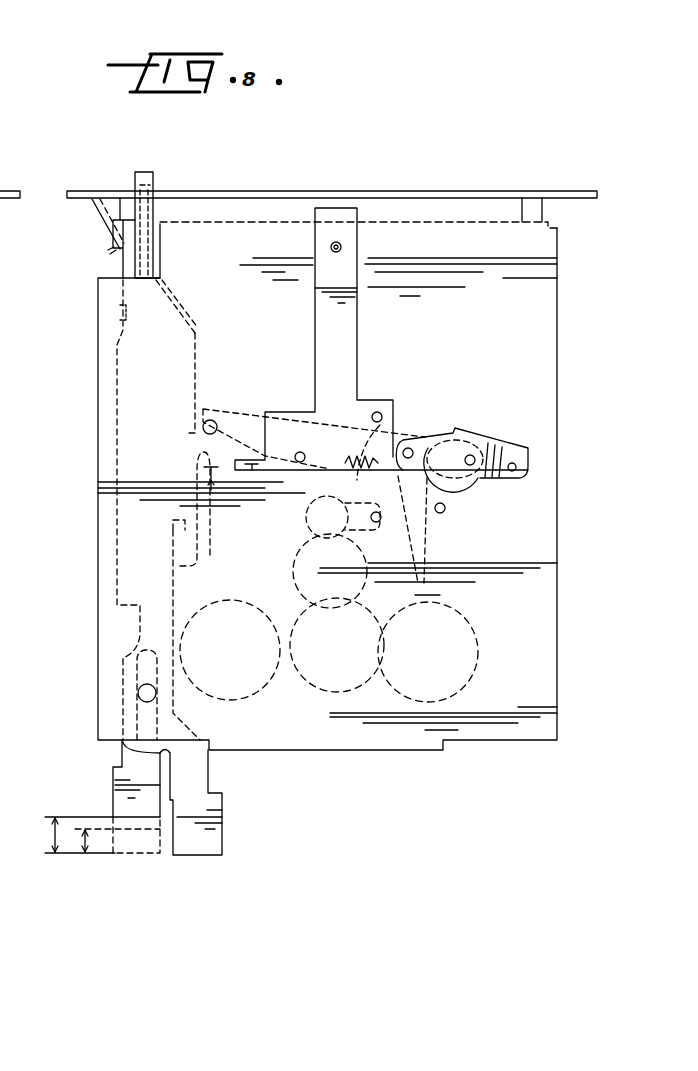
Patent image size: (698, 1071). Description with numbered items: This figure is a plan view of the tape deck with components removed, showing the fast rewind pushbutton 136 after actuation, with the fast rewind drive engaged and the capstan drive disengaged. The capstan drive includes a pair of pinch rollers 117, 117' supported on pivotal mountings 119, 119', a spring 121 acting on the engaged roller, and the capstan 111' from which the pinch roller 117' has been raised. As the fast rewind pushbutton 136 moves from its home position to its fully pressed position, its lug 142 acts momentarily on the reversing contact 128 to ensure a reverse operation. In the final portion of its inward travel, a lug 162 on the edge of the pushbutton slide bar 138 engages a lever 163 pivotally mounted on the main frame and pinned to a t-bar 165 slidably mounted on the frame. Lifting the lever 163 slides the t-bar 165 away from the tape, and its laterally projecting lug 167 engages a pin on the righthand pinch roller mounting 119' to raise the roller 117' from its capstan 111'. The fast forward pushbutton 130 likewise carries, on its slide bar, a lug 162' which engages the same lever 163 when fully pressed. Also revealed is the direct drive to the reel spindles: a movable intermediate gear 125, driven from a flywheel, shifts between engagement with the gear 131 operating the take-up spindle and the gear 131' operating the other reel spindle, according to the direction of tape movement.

The reversing contact 128 is at (298, 234).
The lug 142 is at (109, 252).
The pushbutton slide bar 138 is at (118, 358).
The pivotal mounting 119 is at (161, 383).
The pivotal mounting 119' is at (324, 431).
The spring 121 is at (98, 426).
The pinch roller 117 is at (301, 494).
The pinch roller 117' is at (540, 488).
The capstan 111' is at (543, 531).
The lever 163 is at (238, 410).
The t-bar 165 is at (358, 317).
The laterally projecting lug 167 is at (252, 468).
The lug 162 is at (228, 509).
The lug 162' is at (214, 630).
The gear 131 is at (241, 704).
The intermediate gear 125 is at (342, 697).
The gear 131' is at (458, 705).
The fast rewind pushbutton 136 is at (113, 788).
The fast forward pushbutton 130 is at (222, 828).